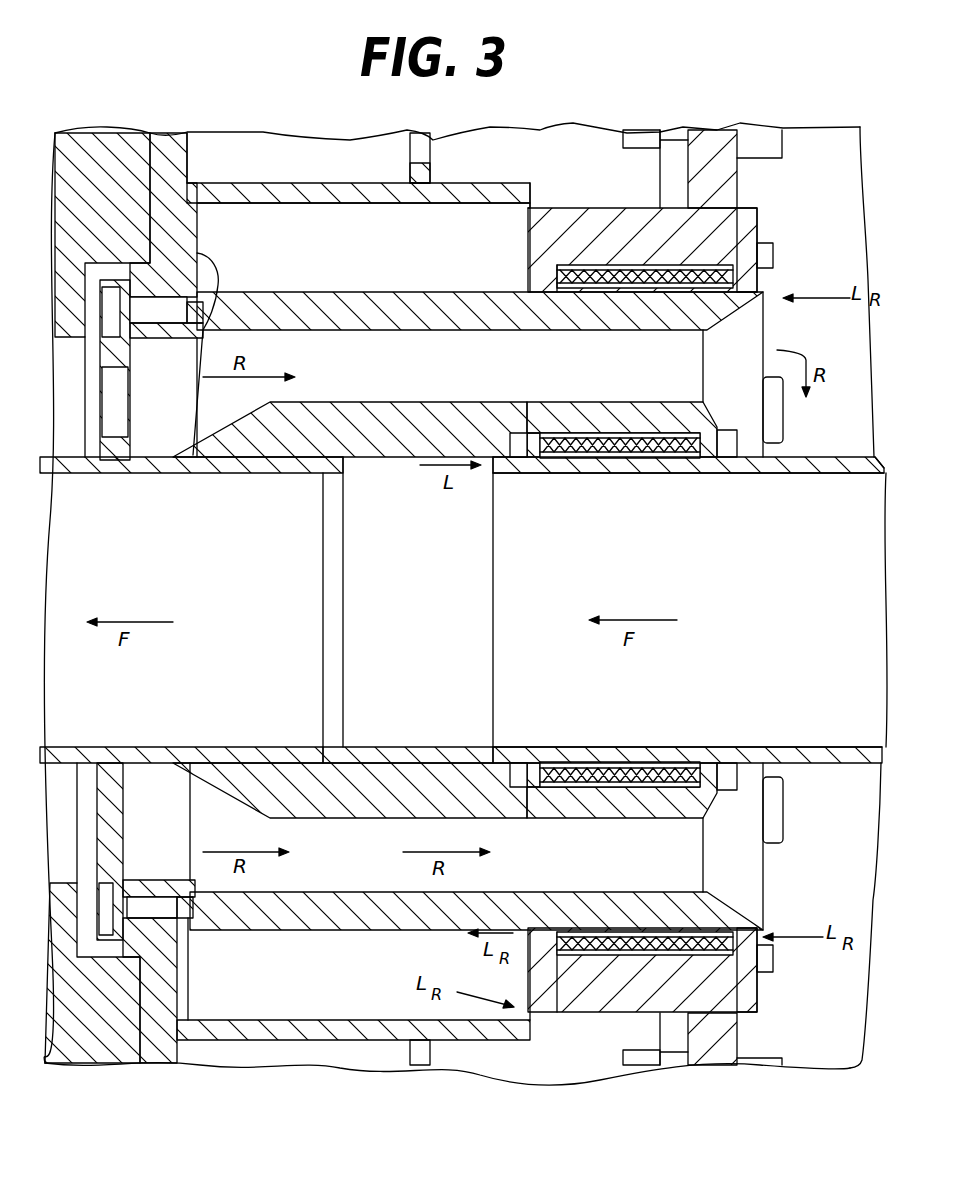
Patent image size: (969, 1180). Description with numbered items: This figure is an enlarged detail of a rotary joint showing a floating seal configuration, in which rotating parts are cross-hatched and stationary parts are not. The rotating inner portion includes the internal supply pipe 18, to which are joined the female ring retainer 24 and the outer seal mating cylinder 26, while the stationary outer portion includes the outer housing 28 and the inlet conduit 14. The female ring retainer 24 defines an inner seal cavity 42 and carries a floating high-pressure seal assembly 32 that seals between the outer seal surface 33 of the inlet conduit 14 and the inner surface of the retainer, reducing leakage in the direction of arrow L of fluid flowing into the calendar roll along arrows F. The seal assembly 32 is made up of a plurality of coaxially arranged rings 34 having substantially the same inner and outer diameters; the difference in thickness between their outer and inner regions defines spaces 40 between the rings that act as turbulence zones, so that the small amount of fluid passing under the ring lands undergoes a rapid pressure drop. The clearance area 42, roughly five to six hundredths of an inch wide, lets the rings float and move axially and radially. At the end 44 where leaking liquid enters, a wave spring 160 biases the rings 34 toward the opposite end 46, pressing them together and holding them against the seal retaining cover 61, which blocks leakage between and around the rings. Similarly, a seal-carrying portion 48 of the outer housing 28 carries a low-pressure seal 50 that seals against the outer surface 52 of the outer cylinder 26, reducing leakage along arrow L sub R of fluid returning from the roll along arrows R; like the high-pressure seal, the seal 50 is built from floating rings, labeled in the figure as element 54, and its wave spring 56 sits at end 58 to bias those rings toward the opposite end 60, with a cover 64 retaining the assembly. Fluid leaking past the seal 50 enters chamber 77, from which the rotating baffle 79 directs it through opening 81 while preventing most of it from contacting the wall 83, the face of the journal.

The inlet conduit 14 is at (830, 480).
The internal supply pipe 18 is at (147, 463).
The female ring retainer 24 is at (345, 420).
The outer seal mating cylinder 26 is at (312, 297).
The outer housing 28 is at (727, 181).
The floating high-pressure seal assembly 32 is at (554, 477).
The outer seal surface 33 is at (800, 457).
The rings 34 is at (690, 467).
The spaces 40 is at (630, 467).
The inner seal cavity (clearance area) 42 is at (593, 433).
The end of the seal 44 is at (533, 452).
The opposite end of the seal 46 is at (717, 427).
The seal-carrying portion 48 is at (573, 210).
The low-pressure seal 50 is at (600, 252).
The outer surface 52 is at (317, 932).
The spring 54 is at (592, 260).
The wave spring 56 is at (757, 279).
The end 58 is at (770, 251).
The opposite end 60 is at (750, 228).
The seal retaining cover 61 is at (693, 400).
The cover 64 is at (743, 991).
The chamber 77 is at (372, 240).
The rotating baffle 79 is at (288, 183).
The opening 81 is at (536, 200).
The wall 83 is at (193, 342).
The wave spring 160 is at (520, 437).